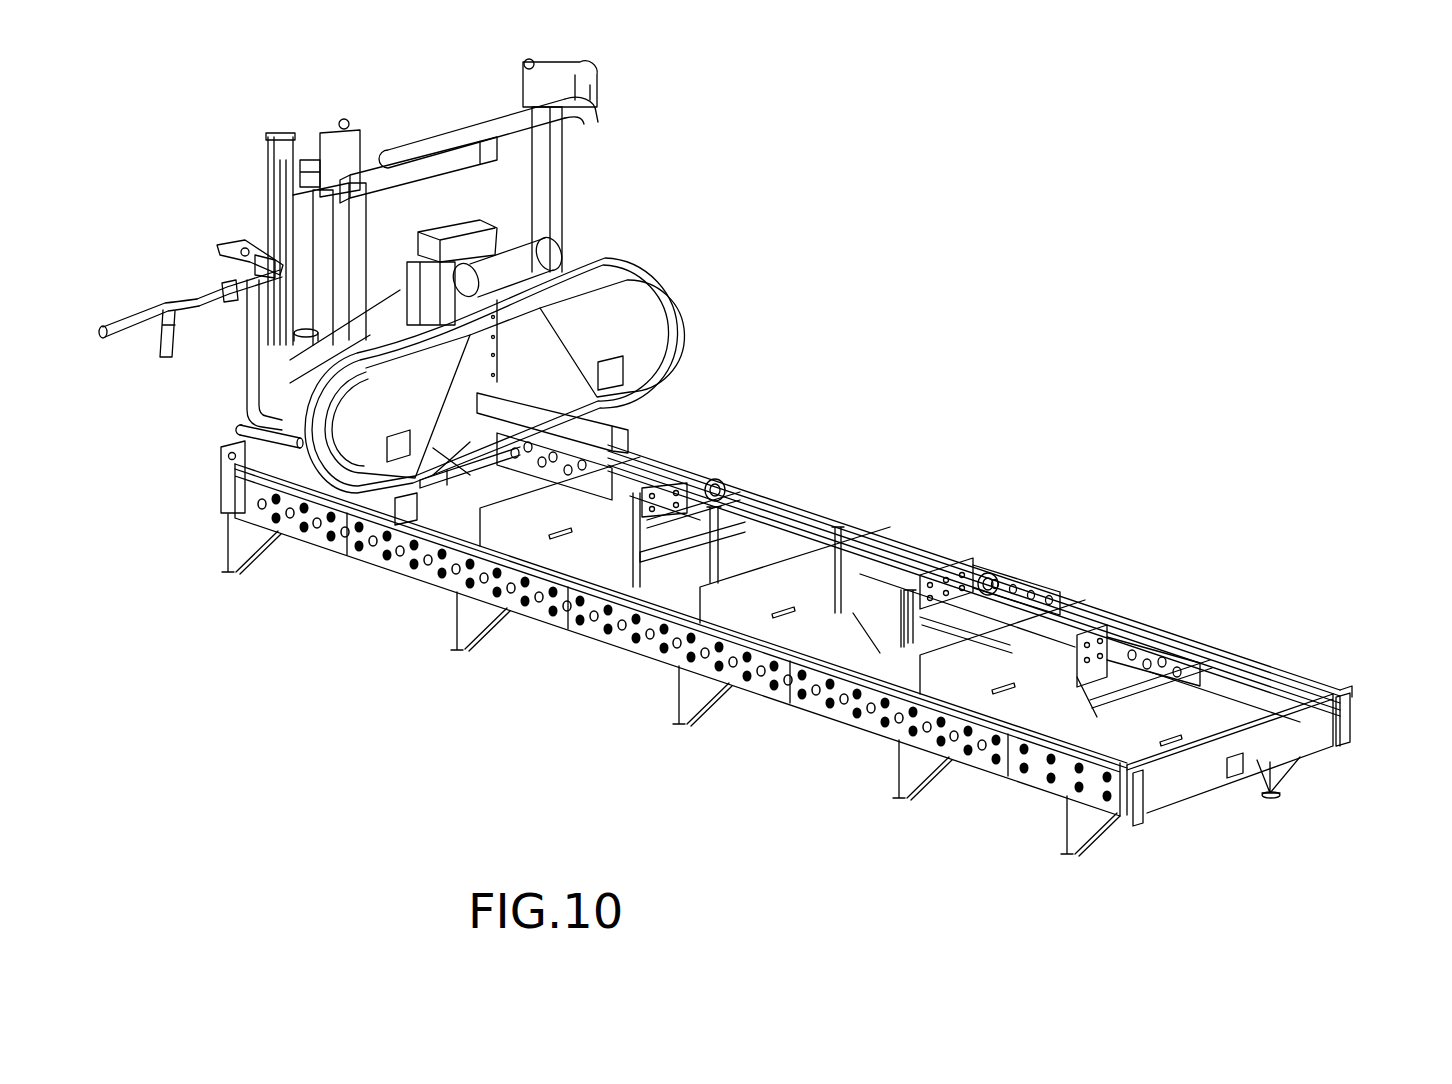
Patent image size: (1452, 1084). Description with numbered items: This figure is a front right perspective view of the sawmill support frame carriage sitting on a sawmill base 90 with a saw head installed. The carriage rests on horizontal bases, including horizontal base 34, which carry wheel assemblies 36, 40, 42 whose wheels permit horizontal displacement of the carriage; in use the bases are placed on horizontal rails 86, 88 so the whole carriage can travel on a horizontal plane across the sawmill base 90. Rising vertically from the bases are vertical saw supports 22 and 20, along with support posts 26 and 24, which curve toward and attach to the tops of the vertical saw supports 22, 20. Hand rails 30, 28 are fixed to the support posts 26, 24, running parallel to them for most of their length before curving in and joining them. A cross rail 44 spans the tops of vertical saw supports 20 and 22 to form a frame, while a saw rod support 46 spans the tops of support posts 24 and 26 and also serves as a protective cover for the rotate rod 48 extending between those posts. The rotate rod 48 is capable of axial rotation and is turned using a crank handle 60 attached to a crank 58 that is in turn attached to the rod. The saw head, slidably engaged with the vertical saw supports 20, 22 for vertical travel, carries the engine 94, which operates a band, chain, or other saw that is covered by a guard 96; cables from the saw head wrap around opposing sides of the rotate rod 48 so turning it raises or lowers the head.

The vertical saw support 20 is at (357, 293).
The vertical saw support 22 is at (541, 181).
The support post 24 is at (290, 293).
The support post 26 is at (487, 207).
The hand rail 28 is at (247, 350).
The hand rail 30 is at (457, 220).
The horizontal base 34 is at (272, 463).
The wheel assembly 36 is at (630, 440).
The wheel assembly 40 is at (400, 513).
The wheel assembly 42 is at (223, 460).
The cross rail 44 is at (574, 108).
The saw rod support 46 is at (413, 183).
The rotate rod 48 is at (430, 150).
The crank 58 is at (223, 243).
The crank handle 60 is at (260, 247).
The horizontal rail 86 is at (920, 550).
The horizontal rail 88 is at (800, 657).
The sawmill base 90 is at (1363, 640).
The engine 94 is at (257, 387).
The guard 96 is at (640, 303).